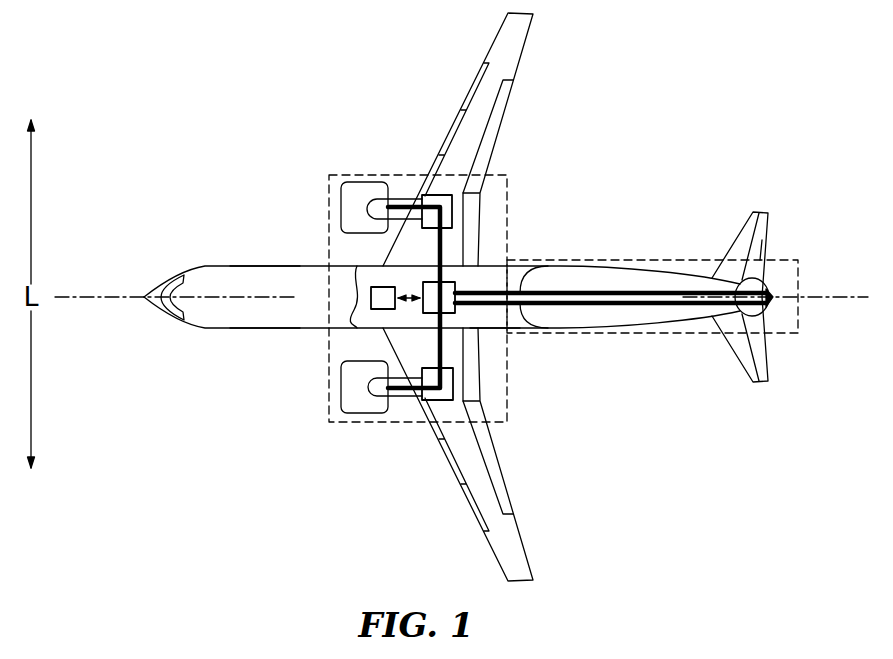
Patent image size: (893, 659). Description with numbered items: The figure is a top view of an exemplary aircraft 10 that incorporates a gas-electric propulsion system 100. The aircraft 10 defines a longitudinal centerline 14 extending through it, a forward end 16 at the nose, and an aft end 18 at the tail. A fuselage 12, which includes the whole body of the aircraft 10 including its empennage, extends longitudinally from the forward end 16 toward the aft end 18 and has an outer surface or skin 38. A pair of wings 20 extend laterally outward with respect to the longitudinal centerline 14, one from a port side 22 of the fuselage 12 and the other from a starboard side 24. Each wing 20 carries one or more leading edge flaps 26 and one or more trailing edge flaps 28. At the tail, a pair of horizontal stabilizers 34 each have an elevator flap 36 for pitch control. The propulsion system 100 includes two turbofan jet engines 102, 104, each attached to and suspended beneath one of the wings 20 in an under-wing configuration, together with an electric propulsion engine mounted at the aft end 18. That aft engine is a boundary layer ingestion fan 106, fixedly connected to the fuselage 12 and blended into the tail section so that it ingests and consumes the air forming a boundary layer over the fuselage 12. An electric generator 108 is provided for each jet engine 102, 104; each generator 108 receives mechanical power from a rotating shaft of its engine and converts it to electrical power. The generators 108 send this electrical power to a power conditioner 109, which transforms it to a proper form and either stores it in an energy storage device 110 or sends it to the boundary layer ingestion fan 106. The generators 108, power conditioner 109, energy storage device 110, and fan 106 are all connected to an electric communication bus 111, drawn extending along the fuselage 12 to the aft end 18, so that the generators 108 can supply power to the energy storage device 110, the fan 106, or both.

The aircraft 10 is at (640, 98).
The fuselage 12 is at (193, 318).
The longitudinal centerline 14 is at (77, 297).
The forward end 16 is at (143, 316).
The aft end 18 is at (727, 380).
The wings 20 is at (516, 31).
The port side 22 is at (263, 350).
The starboard side 24 is at (267, 255).
The leading edge flaps 26 is at (450, 462).
The trailing edge flaps 28 is at (500, 468).
The horizontal stabilizers 34 is at (748, 233).
The elevator flap 36 is at (766, 233).
The outer surface or skin 38 is at (597, 315).
The propulsion system 100 is at (560, 259).
The turbofan jet engine 102 is at (346, 413).
The turbofan jet engine 104 is at (356, 183).
The boundary layer ingestion fan 106 is at (770, 266).
The electric generator 108 is at (453, 210).
The power conditioner 109 is at (456, 285).
The energy storage device 110 is at (375, 310).
The electric communication bus 111 is at (493, 318).